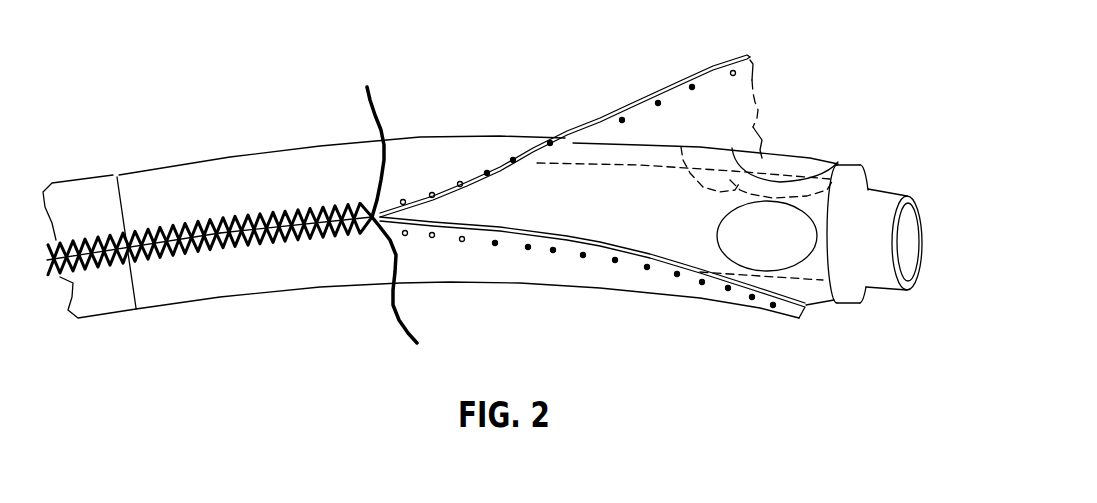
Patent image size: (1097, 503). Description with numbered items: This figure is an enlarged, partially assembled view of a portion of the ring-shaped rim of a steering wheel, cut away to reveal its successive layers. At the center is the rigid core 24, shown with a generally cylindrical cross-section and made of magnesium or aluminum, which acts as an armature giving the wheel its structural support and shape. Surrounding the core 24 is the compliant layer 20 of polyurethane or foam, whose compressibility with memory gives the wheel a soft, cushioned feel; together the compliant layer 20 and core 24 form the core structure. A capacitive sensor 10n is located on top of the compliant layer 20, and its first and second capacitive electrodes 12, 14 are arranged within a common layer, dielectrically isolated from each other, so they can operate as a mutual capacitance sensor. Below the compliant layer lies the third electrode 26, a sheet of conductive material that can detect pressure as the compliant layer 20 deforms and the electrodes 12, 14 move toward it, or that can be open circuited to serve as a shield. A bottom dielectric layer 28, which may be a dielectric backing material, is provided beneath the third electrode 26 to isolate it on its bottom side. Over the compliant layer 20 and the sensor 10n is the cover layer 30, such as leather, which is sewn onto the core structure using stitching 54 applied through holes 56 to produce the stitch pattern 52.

The capacitive sensor 10n is at (797, 132).
The first capacitive electrode 12 is at (820, 140).
The second capacitive electrode 14 is at (810, 163).
The compliant layer 20 is at (870, 182).
The rigid core 24 is at (902, 250).
The third electrode 26 is at (681, 147).
The bottom dielectric layer 28 is at (902, 285).
The cover layer 30 is at (718, 63).
The stitch pattern 52 is at (270, 218).
The stitching 54 is at (395, 315).
The holes 56 is at (403, 200).